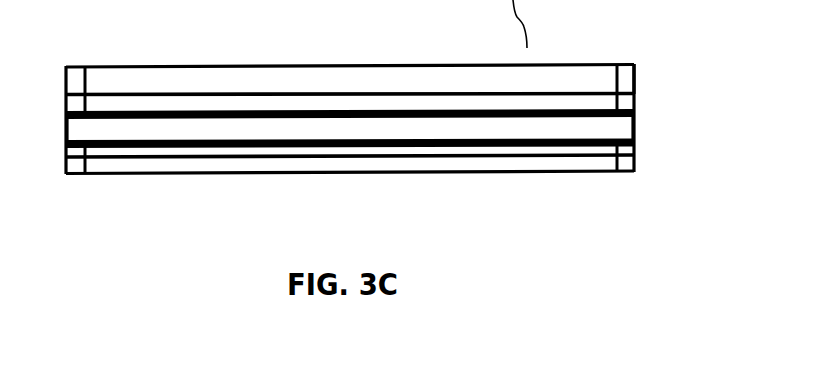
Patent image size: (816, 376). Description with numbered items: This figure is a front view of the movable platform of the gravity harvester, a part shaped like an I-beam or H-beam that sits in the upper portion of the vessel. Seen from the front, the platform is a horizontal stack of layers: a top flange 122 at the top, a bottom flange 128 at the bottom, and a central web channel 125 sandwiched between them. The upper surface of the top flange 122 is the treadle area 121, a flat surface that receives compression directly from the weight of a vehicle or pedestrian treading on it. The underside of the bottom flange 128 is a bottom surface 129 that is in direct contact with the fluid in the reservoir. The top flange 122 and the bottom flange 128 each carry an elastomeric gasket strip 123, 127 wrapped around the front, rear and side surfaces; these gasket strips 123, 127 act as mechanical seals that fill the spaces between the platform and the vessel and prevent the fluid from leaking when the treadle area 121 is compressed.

The treadle area 121 is at (592, 58).
The top flange 122 is at (648, 73).
The elastomeric gasket strip 123 is at (632, 93).
The central web channel 125 is at (635, 127).
The elastomeric gasket strip 127 is at (633, 153).
The bottom flange 128 is at (643, 165).
The bottom surface 129 is at (597, 174).